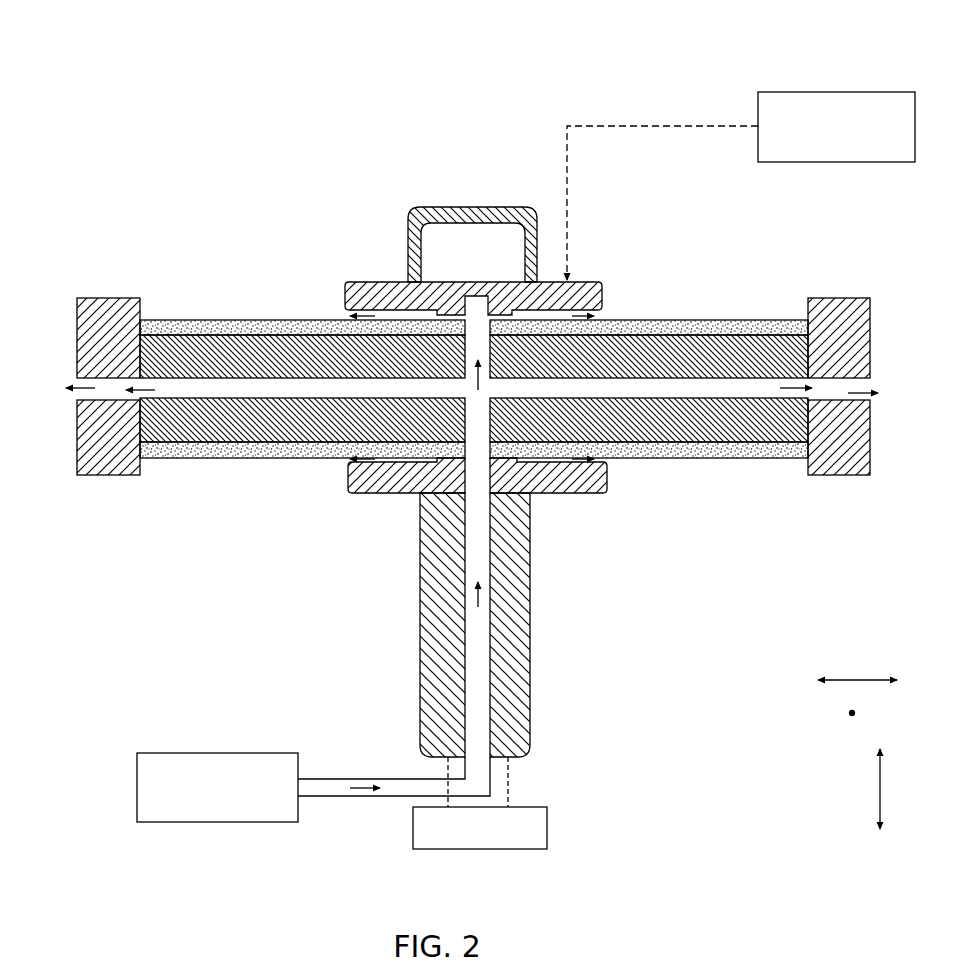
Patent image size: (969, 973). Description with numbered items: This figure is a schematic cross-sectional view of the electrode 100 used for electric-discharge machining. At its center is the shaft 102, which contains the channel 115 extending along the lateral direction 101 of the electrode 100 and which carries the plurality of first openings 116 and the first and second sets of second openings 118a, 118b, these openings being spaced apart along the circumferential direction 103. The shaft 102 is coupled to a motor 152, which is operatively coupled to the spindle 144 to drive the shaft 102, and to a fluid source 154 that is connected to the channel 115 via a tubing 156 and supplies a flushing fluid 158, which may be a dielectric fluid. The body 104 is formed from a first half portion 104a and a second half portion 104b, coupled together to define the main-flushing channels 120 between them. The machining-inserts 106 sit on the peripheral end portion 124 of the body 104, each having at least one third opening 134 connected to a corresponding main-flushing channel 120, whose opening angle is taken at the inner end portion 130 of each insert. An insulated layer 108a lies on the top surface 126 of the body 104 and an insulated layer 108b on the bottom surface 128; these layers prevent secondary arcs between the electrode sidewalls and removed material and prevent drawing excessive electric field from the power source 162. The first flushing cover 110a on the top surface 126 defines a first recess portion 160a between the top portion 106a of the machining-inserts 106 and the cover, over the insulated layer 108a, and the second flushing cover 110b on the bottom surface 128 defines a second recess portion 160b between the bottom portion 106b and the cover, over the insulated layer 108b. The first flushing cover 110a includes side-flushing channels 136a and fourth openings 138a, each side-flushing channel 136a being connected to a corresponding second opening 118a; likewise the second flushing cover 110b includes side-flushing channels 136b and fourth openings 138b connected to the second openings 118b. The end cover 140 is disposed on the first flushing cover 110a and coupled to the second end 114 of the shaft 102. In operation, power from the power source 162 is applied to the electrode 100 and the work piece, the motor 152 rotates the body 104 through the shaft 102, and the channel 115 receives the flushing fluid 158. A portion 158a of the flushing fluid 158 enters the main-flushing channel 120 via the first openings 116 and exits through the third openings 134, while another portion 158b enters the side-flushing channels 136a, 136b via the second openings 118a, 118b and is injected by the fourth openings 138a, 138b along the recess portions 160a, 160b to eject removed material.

The electrode 100 is at (165, 135).
The lateral direction 101 is at (878, 798).
The shaft 102 is at (530, 652).
The circumferential direction 103 is at (848, 680).
The body 104 is at (471, 387).
The first half portion 104a is at (778, 345).
The second half portion 104b is at (730, 458).
The machining-insert 106 is at (469, 385).
The top portion of machining-inserts 106a is at (140, 298).
The bottom portion of machining-inserts 106b is at (840, 477).
The insulated layer 108a is at (474, 312).
The insulated layer 108b is at (480, 463).
The first flushing cover 110a is at (395, 300).
The second flushing cover 110b is at (397, 495).
The second end 114 is at (568, 232).
The channel 115 is at (465, 400).
The first openings 116 is at (394, 598).
The first set of second openings 118a is at (466, 298).
The second set of second openings 118b is at (492, 500).
The main-flushing channel 120 is at (182, 320).
The peripheral end portion 124 is at (78, 338).
The top surface 126 is at (625, 355).
The bottom surface 128 is at (778, 458).
The inner end portion 130 is at (168, 368).
The third opening 134 is at (75, 390).
The side-flushing channel 136a is at (343, 283).
The side-flushing channel 136b is at (352, 494).
The fourth opening 138a is at (368, 318).
The fourth opening 138b is at (330, 460).
The end cover 140 is at (462, 207).
The spindle 144 is at (510, 780).
The motor 152 is at (547, 832).
The fluid source 154 is at (225, 753).
The tubing 156 is at (320, 779).
The flushing fluid 158 is at (482, 373).
The portion of flushing fluid 158a is at (158, 390).
The another portion of flushing fluid 158b is at (355, 330).
The first recess portion 160a is at (267, 307).
The second recess portion 160b is at (752, 470).
The power source 162 is at (837, 92).